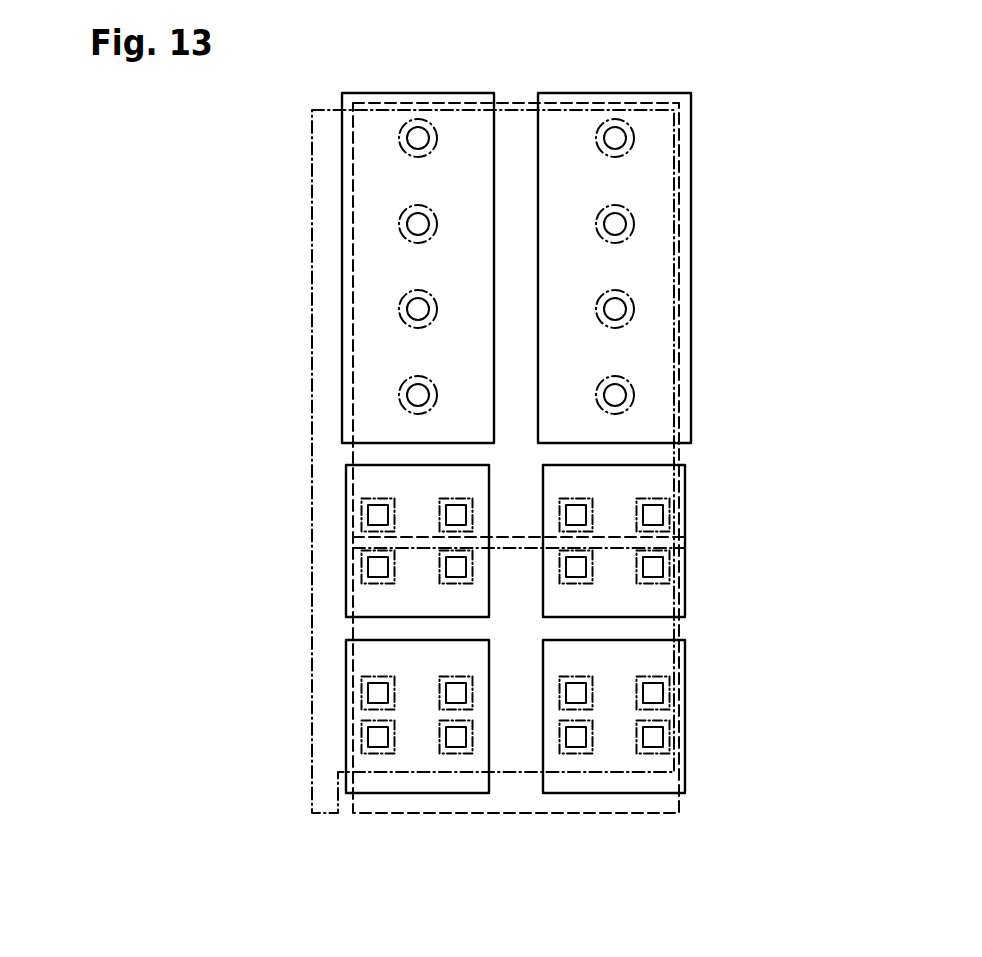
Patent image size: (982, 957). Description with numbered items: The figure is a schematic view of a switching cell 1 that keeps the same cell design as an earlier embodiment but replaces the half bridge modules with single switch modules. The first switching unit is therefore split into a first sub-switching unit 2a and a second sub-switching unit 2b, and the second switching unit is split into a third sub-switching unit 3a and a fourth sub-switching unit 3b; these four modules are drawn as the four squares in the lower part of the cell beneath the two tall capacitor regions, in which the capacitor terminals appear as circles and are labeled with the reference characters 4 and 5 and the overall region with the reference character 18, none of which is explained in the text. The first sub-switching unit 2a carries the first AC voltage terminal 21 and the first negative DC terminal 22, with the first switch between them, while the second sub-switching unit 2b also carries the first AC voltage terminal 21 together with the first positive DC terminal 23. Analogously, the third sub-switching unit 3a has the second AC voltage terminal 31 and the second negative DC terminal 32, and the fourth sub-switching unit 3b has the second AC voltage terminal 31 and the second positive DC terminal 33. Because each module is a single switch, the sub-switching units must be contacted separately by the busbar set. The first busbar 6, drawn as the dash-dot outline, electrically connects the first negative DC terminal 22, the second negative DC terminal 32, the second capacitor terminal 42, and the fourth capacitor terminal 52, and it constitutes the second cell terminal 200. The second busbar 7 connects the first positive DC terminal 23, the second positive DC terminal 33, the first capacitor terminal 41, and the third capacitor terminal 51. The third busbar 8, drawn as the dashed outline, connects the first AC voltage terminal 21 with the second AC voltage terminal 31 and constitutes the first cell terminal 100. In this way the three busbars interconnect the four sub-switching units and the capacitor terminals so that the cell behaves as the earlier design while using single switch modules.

The switching cell 1 is at (229, 114).
The housing 18 is at (364, 88).
The first busbar 4 is at (342, 101).
The second busbar 5 is at (691, 101).
The first capacitor terminal 41 is at (418, 138).
The second capacitor terminal 42 is at (418, 224).
The third capacitor terminal 51 is at (615, 138).
The fourth capacitor terminal 52 is at (615, 224).
The second busbar 7 is at (520, 102).
The first busbar 6 is at (674, 772).
The third busbar 8 is at (681, 807).
The first sub-switching unit 2a is at (373, 718).
The second sub-switching unit 2b is at (363, 545).
The third sub-switching unit 3a is at (658, 717).
The fourth sub-switching unit 3b is at (670, 541).
The first AC voltage terminal 21 is at (452, 572).
The first positive DC terminal 23 is at (453, 513).
The first negative DC terminal 22 is at (378, 743).
The second AC voltage terminal 31 is at (580, 572).
The second positive DC terminal 33 is at (580, 512).
The second negative DC terminal 32 is at (578, 743).
The first cell terminal 100 is at (516, 790).
The second cell terminal 200 is at (322, 812).